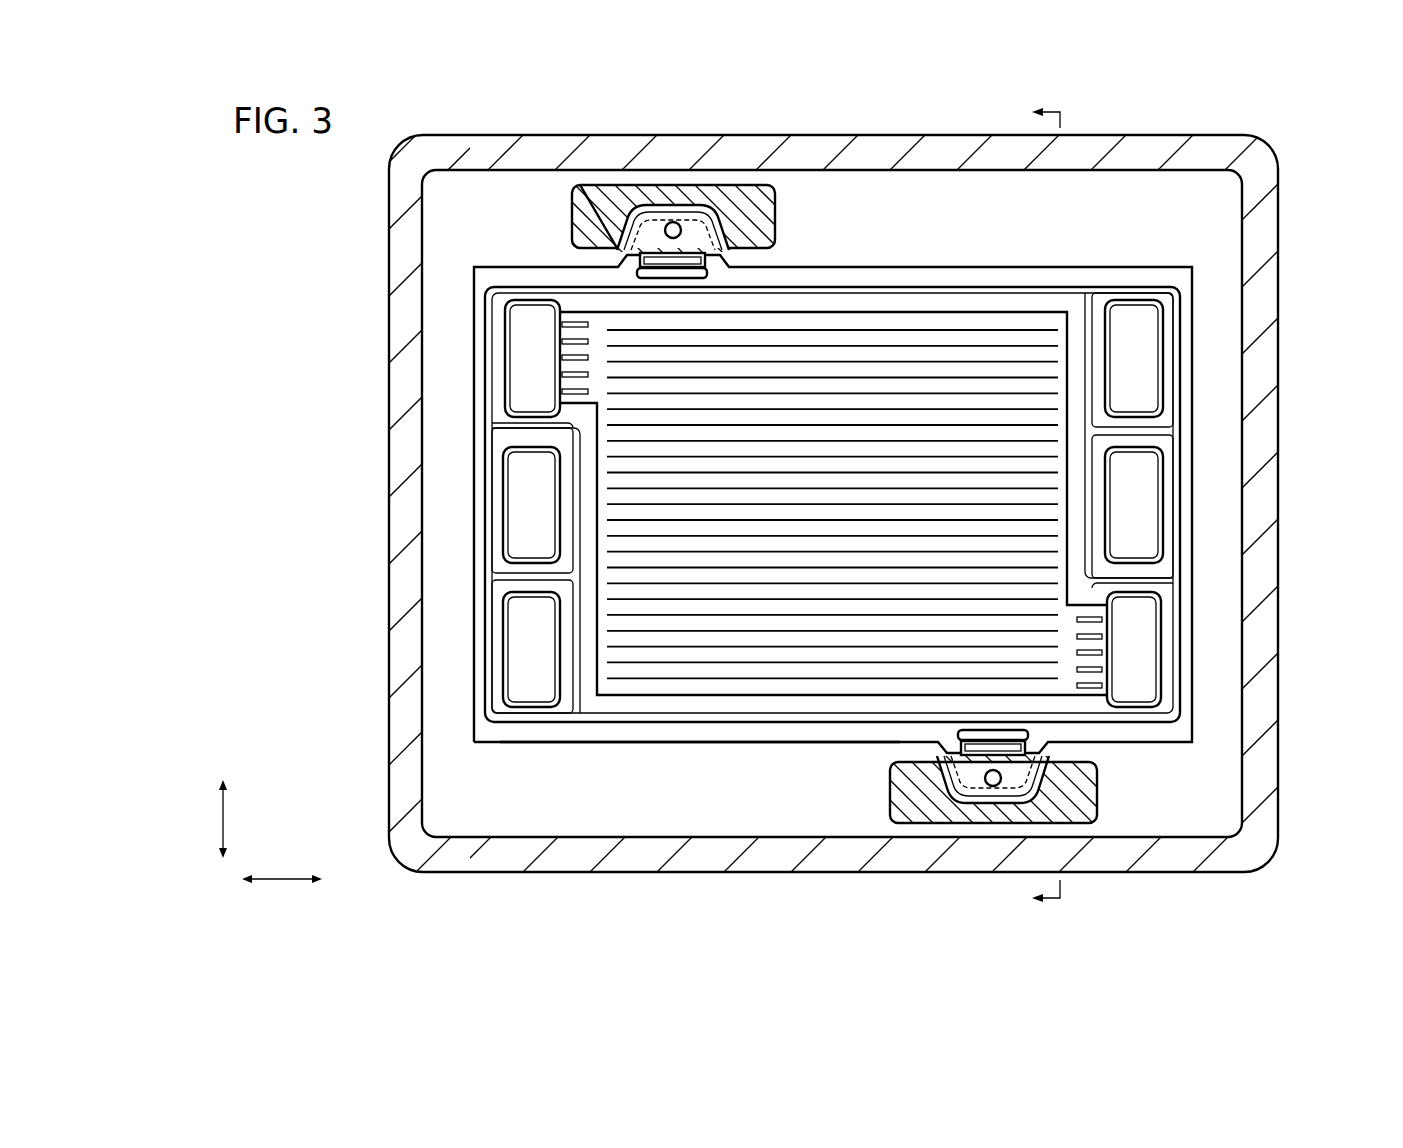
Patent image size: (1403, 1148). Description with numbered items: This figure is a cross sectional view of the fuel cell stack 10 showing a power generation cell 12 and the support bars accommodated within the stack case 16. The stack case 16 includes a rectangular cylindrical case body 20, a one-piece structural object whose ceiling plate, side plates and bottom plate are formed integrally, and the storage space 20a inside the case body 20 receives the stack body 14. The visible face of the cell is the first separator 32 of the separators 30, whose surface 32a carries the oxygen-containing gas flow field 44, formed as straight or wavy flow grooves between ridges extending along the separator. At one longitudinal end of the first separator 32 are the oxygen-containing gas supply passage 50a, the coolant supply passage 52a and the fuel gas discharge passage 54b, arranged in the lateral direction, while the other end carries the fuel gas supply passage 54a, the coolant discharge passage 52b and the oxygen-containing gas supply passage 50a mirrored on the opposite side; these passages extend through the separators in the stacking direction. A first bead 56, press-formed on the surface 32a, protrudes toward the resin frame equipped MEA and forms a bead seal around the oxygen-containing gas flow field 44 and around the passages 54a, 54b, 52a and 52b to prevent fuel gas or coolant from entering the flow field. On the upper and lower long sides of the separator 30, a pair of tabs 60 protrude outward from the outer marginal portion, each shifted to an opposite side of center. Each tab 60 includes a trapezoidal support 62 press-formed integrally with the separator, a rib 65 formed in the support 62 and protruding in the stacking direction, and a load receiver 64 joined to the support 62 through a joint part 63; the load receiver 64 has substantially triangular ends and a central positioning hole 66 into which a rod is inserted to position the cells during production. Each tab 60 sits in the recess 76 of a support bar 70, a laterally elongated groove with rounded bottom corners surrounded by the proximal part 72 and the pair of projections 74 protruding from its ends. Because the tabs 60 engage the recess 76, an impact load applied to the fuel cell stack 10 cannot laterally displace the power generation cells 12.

The fuel cell stack 10 is at (305, 183).
The power generation cell 12 is at (1064, 256).
The stack body 14 is at (833, 504).
The stack case 16 is at (833, 503).
The case body 20 is at (378, 278).
The storage space 20a is at (445, 542).
The separator 30 is at (832, 504).
The first separator 32 is at (1158, 272).
The surface 32a is at (609, 738).
The oxygen-containing gas flow field 44 is at (930, 328).
The oxygen-containing gas supply passage 50a is at (530, 350).
The coolant supply passage 52a is at (527, 481).
The coolant discharge passage 52b is at (1135, 483).
The fuel gas supply passage 54a is at (1135, 352).
The fuel gas discharge passage 54b is at (527, 658).
The first bead 56 is at (1025, 291).
The tab 60 is at (628, 200).
The support 62 is at (724, 258).
The joint part 63 is at (628, 258).
The load receiver 64 is at (725, 218).
The rib 65 is at (652, 272).
The positioning hole 66 is at (673, 221).
The support bar 70 is at (563, 176).
The proximal part 72 is at (715, 195).
The projection 74 is at (600, 213).
The recess 76 is at (617, 226).